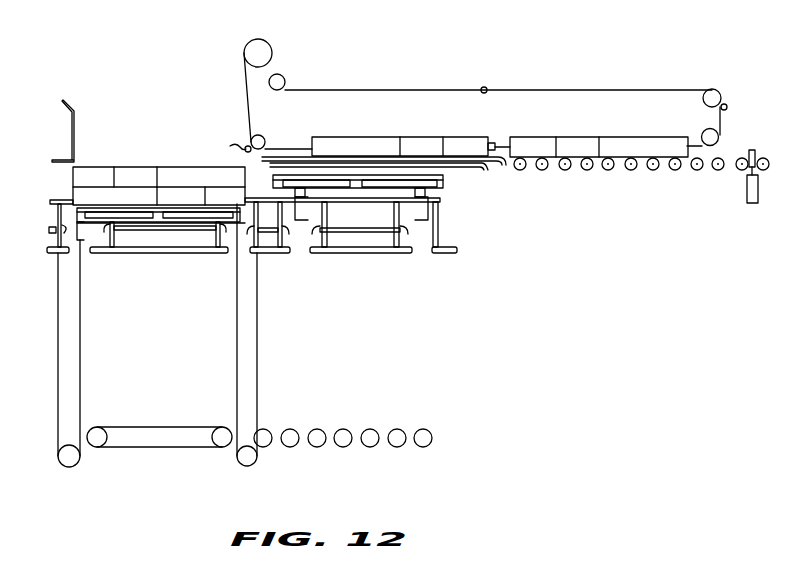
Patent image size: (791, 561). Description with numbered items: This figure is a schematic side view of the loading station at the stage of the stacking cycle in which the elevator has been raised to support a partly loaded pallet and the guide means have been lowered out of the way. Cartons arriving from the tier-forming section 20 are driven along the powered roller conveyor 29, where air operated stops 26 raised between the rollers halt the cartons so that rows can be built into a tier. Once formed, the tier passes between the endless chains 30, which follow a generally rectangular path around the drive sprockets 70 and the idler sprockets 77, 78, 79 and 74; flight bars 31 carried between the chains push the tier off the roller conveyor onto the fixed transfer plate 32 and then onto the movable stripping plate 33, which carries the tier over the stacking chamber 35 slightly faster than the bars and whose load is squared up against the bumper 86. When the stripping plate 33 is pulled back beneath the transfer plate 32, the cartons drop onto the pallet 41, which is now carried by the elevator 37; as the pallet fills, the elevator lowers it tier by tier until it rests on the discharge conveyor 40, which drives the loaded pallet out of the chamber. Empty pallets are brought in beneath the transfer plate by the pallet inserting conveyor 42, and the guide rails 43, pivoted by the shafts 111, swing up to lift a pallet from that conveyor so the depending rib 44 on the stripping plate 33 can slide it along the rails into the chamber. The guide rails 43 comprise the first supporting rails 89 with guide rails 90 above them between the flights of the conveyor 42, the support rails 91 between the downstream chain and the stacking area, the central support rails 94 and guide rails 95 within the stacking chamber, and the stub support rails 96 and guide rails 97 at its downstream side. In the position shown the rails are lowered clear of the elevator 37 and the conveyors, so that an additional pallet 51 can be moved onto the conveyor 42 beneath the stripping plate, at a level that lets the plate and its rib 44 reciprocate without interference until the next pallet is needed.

The tier-forming section 20 is at (624, 55).
The air operated stop 26 is at (751, 150).
The powered roller conveyor 29 is at (730, 175).
The endless chains 30 is at (577, 88).
The flight bar 31 is at (486, 87).
The transfer plate 32 is at (506, 166).
The stripping plate 33 is at (469, 165).
The stacking chamber 35 is at (100, 335).
The elevator 37 is at (83, 241).
The discharge conveyor 40 is at (161, 450).
The empty pallet 41 is at (142, 206).
The pallet inserting conveyor 42 is at (430, 200).
The guide rails 43 is at (411, 262).
The depending rib 44 is at (486, 171).
The additional pallet 51 is at (444, 181).
The drive sprockets 70 is at (266, 46).
The lower idler sprocket 74 is at (286, 80).
The idler sprocket 77 is at (719, 90).
The idler sprocket 78 is at (704, 132).
The idler sprocket 79 is at (265, 140).
The bumper 86 is at (74, 113).
The first supporting rails 89 is at (385, 252).
The guide rail 90 is at (358, 233).
The support rails 91 is at (262, 254).
The support rails 94 is at (192, 254).
The guide rails 95 is at (149, 231).
The stub support rails 96 is at (51, 254).
The guide rails 97 is at (49, 231).
The shafts 111 is at (53, 200).